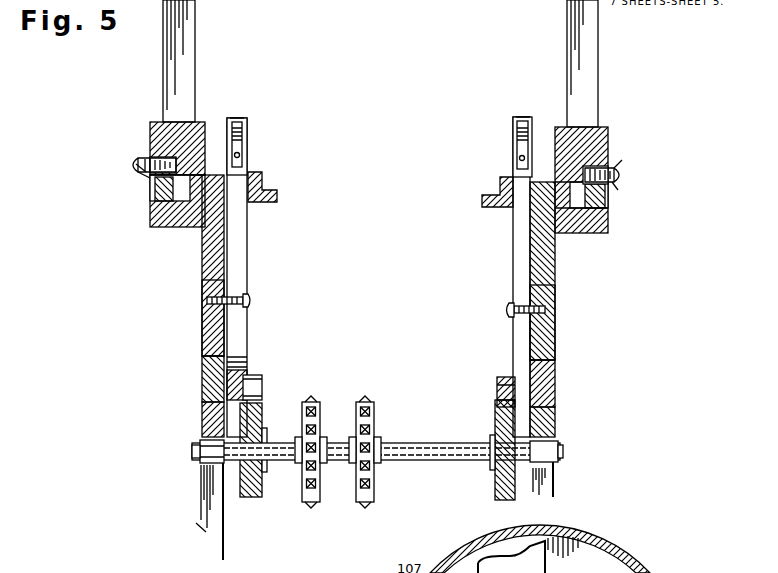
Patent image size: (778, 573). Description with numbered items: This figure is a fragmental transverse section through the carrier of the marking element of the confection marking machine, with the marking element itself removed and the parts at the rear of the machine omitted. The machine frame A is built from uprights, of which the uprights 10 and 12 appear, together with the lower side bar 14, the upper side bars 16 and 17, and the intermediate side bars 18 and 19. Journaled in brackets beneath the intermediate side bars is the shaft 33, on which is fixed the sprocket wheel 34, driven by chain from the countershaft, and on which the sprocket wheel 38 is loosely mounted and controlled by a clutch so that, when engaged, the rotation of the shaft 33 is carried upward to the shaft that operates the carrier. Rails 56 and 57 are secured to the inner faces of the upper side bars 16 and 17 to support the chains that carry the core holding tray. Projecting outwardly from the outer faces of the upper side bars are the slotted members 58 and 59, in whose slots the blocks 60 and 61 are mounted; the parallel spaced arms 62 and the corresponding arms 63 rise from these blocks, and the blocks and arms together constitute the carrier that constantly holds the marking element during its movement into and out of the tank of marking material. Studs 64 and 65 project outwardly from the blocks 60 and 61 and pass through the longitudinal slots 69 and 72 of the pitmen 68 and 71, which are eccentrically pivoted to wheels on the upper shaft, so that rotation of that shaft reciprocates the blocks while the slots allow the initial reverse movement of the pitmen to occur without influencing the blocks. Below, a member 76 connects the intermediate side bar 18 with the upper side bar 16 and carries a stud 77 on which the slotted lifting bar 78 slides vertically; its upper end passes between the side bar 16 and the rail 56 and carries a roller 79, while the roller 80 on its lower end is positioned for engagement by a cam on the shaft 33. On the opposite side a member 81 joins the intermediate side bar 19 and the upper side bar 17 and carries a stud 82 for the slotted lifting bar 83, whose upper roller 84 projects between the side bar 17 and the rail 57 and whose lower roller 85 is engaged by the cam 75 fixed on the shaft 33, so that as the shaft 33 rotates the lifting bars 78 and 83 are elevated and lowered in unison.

The upright 10 is at (210, 533).
The upright 12 is at (555, 480).
The lower side bar 14 is at (248, 497).
The upper side bar 16 is at (205, 237).
The upper side bar 17 is at (556, 247).
The intermediate side bar 18 is at (203, 392).
The intermediate side bar 19 is at (556, 384).
The shaft 33 is at (460, 458).
The sprocket wheel 34 is at (303, 502).
The sprocket wheel 38 is at (375, 497).
The rail 56 is at (268, 203).
The rail 57 is at (485, 208).
The slotted member 58 is at (158, 203).
The slotted member 59 is at (608, 212).
The block 60 is at (150, 132).
The block 61 is at (608, 143).
The parallel spaced arms 62 is at (163, 92).
The arms 63 is at (598, 78).
The stud 64 is at (140, 170).
The stud 65 is at (624, 175).
The pitman 68 is at (138, 163).
The slot 69 is at (142, 176).
The pitman 71 is at (620, 166).
The slot 72 is at (616, 186).
The cam 75 is at (497, 490).
The member 76 is at (203, 330).
The stud 77 is at (250, 300).
The slotted lifting bar 78 is at (247, 340).
The roller 79 is at (237, 118).
The roller 80 is at (262, 380).
The member 81 is at (556, 330).
The stud 82 is at (518, 317).
The slotted lifting bar 83 is at (514, 265).
The roller 84 is at (521, 118).
The roller 85 is at (497, 393).
The frame A is at (197, 522).